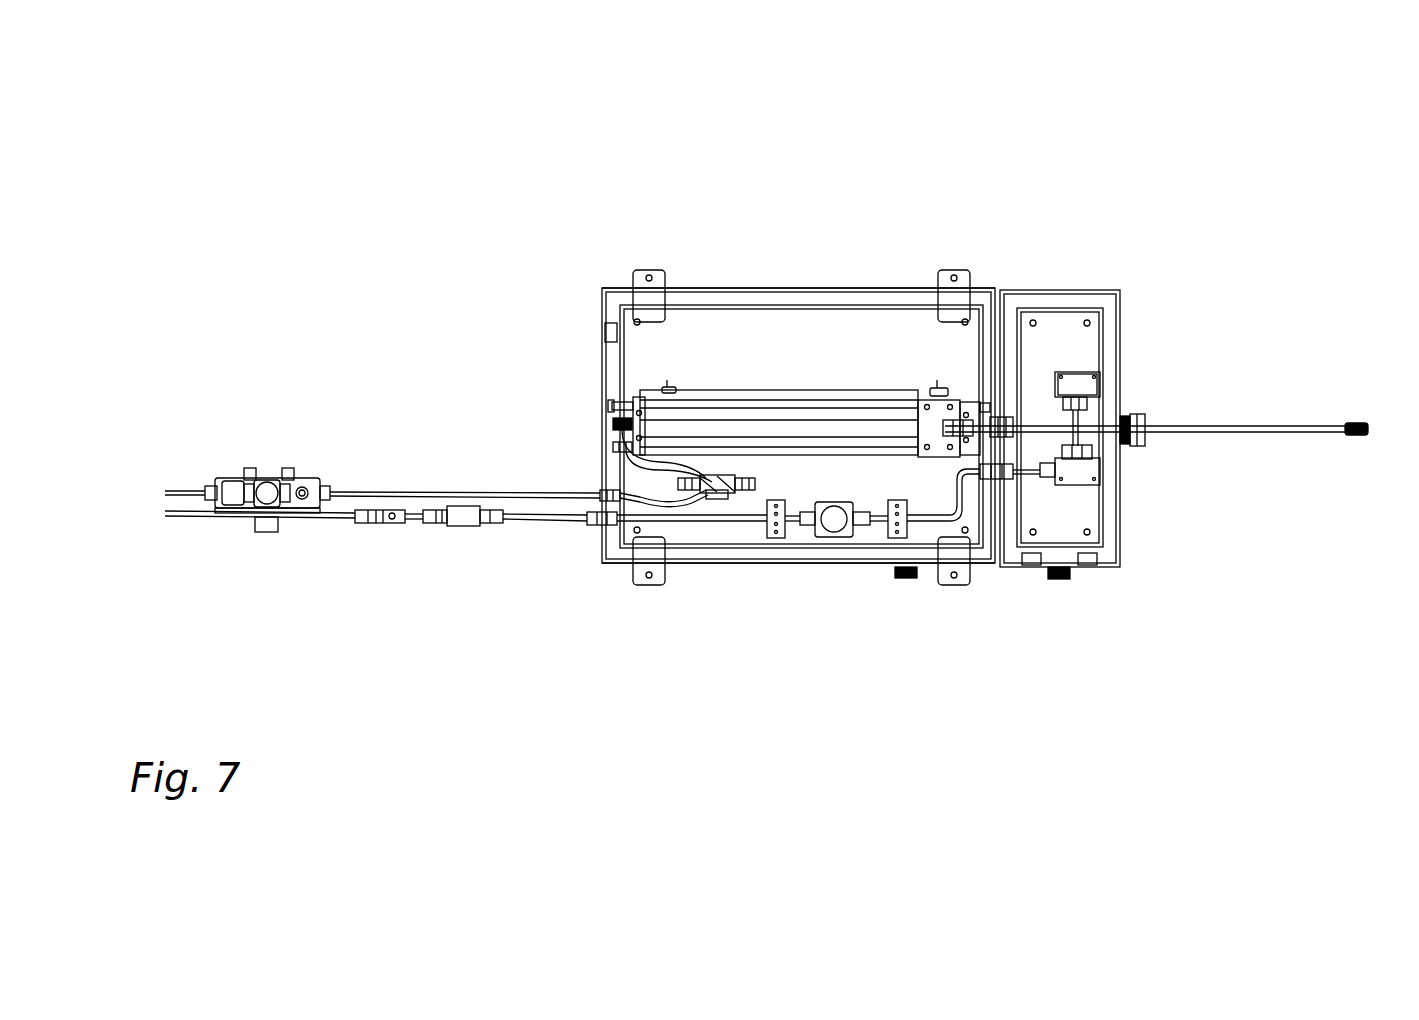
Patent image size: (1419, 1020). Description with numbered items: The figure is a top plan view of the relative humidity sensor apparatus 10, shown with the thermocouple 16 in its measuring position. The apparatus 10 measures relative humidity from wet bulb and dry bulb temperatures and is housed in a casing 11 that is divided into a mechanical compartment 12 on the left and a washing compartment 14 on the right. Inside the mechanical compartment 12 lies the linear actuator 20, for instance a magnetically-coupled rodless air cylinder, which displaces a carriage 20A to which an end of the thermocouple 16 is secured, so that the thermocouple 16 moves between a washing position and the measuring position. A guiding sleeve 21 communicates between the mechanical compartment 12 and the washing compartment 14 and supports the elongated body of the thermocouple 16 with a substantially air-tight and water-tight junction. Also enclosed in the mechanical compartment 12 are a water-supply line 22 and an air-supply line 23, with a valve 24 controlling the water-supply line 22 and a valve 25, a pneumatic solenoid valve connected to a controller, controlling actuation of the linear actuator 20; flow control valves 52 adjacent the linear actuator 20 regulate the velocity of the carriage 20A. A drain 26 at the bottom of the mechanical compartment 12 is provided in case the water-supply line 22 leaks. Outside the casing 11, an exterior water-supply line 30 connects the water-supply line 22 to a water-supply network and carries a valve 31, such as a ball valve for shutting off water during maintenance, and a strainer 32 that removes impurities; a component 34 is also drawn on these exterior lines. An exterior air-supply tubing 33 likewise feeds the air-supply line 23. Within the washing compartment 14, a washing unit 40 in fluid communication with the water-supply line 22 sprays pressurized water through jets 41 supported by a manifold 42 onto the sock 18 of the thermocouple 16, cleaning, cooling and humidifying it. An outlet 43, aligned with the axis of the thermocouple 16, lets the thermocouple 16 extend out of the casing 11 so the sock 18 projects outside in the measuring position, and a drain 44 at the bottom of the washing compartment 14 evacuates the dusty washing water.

The relative humidity sensor apparatus 10 is at (565, 232).
The casing 11 is at (760, 283).
The mechanical compartment 12 is at (800, 295).
The washing compartment 14 is at (1060, 300).
The thermocouple 16 is at (1280, 420).
The sock 18 is at (1360, 424).
The linear actuator 20 is at (770, 390).
The carriage 20A is at (922, 404).
The guiding sleeve 21 is at (1004, 415).
The water-supply line 22 is at (740, 520).
The air-supply line 23 is at (603, 493).
The valve 24 is at (835, 545).
The valve 25 is at (733, 476).
The drain 26 is at (905, 585).
The exterior water-supply line 30 is at (165, 510).
The valve 31 is at (380, 540).
The strainer 32 is at (463, 538).
The exterior air-supply tubing 33 is at (165, 490).
The regulator 34 is at (265, 478).
The washing unit 40 is at (1093, 355).
The jets 41 is at (1090, 452).
The manifold 42 is at (1097, 383).
The outlet 43 is at (1147, 438).
The drain 44 is at (1062, 585).
The flow control valves 52 is at (620, 432).